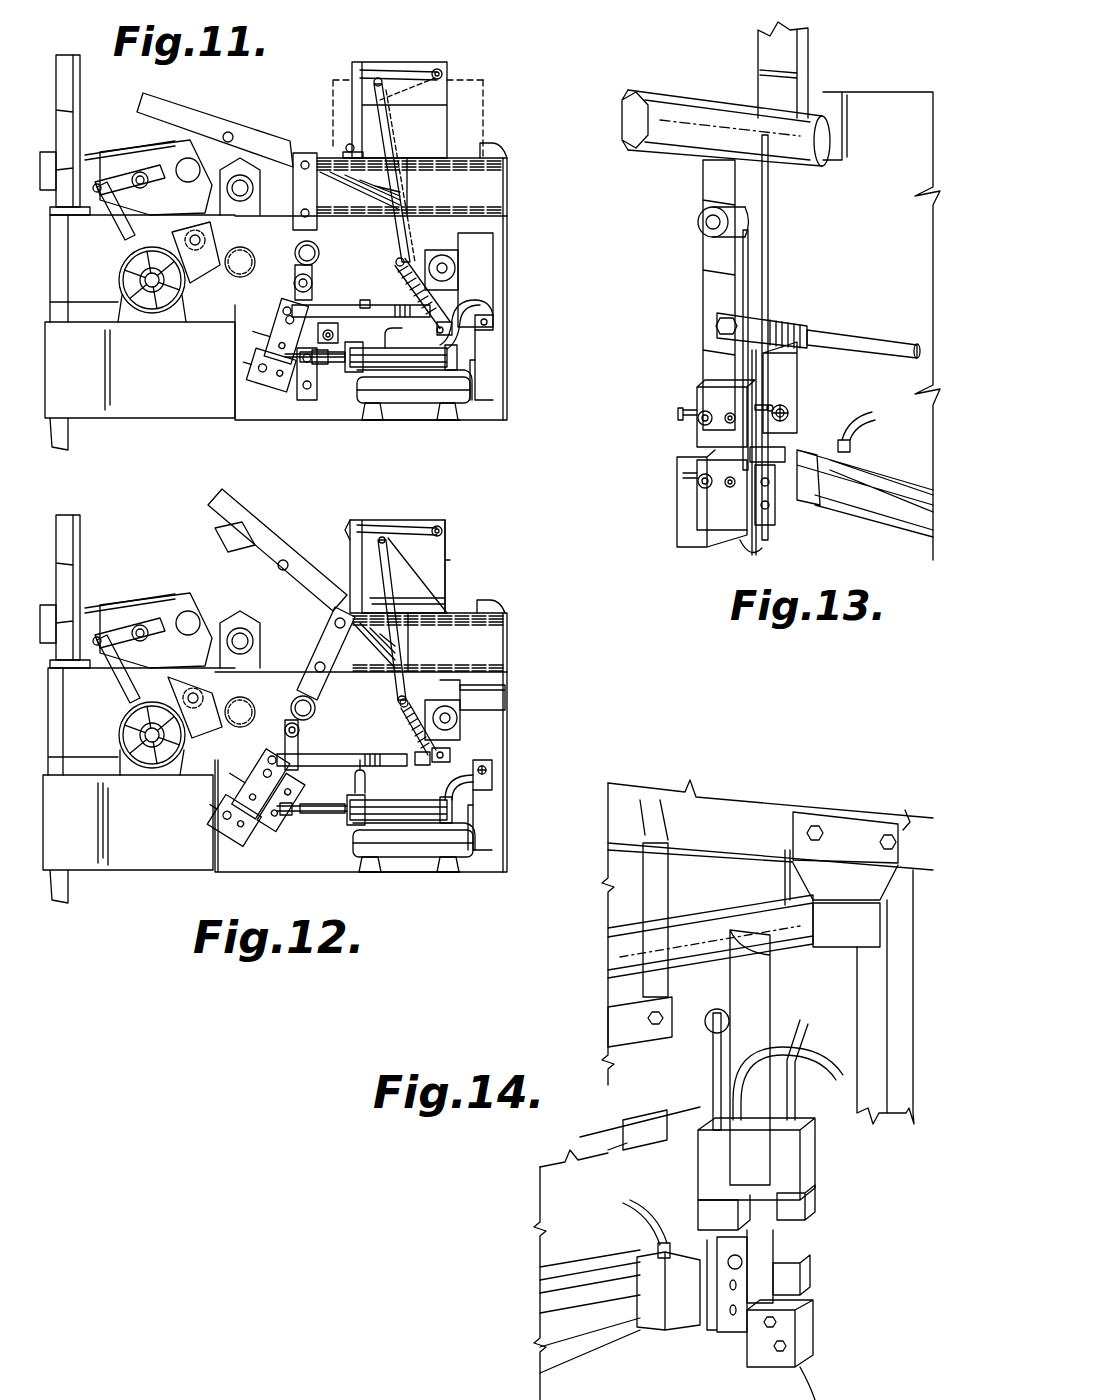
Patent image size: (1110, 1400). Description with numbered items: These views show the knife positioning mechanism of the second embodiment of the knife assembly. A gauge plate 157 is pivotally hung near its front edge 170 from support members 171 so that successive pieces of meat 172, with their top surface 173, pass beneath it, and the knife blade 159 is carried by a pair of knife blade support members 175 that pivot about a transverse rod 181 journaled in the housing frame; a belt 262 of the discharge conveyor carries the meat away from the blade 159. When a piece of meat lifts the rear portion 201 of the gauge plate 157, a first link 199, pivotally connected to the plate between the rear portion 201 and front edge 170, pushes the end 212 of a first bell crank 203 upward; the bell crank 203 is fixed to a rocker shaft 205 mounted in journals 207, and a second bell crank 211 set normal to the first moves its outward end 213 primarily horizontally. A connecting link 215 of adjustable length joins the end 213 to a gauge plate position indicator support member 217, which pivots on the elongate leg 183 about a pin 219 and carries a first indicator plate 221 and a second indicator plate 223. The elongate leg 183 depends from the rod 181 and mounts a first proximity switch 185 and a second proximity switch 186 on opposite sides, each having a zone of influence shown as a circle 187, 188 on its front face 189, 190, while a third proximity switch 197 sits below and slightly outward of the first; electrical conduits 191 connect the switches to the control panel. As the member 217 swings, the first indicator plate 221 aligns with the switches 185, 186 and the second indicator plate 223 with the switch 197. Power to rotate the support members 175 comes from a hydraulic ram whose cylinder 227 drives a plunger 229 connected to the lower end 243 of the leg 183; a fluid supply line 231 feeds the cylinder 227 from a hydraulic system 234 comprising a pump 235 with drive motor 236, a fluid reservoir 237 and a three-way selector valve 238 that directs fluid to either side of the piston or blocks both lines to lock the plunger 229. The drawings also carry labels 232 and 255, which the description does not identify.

In FIG. 11, the gauge plate 157 is at (393, 70).
In FIG. 12, the gauge plate 157 is at (395, 526).
In FIG. 11, the knife blade 159 is at (170, 140).
In FIG. 12, the knife blade 159 is at (216, 532).
In FIG. 12, the front edge 170 is at (446, 526).
In FIG. 12, the support members 171 is at (445, 592).
In FIG. 11, the pieces of meat 172 is at (485, 80).
In FIG. 11, the top surface 173 is at (466, 62).
In FIG. 11, the knife blade support members 175 is at (290, 137).
In FIG. 12, the knife blade support members 175 is at (256, 522).
In FIG. 11, the rod 181 is at (320, 253).
In FIG. 12, the rod 181 is at (316, 708).
In FIG. 13, the rod 181 is at (658, 92).
In FIG. 14, the rod 181 is at (717, 903).
In FIG. 11, the elongate leg 183 is at (313, 283).
In FIG. 13, the elongate leg 183 is at (769, 210).
In FIG. 14, the elongate leg 183 is at (763, 986).
In FIG. 12, the first proximity switch 185 is at (250, 752).
In FIG. 13, the first proximity switch 185 is at (702, 316).
In FIG. 14, the first proximity switch 185 is at (813, 1197).
In FIG. 12, the second proximity switch 186 is at (305, 792).
In FIG. 13, the second proximity switch 186 is at (797, 374).
In FIG. 14, the second proximity switch 186 is at (700, 1207).
In FIG. 13, the circle 187 is at (685, 410).
In FIG. 13, the circle 188 is at (790, 403).
In FIG. 13, the front face 189 is at (698, 385).
In FIG. 13, the front face 190 is at (787, 413).
In FIG. 14, the electrical conduits 191 is at (801, 1030).
In FIG. 13, the third proximity switch 197 is at (677, 512).
In FIG. 14, the third proximity switch 197 is at (803, 1272).
In FIG. 11, the first link 199 is at (405, 185).
In FIG. 12, the first link 199 is at (392, 572).
In FIG. 12, the rear portion 201 is at (352, 520).
In FIG. 12, the first bell crank 203 is at (446, 705).
In FIG. 12, the rocker shaft 205 is at (504, 697).
In FIG. 12, the journals 207 is at (447, 682).
In FIG. 12, the second bell crank 211 is at (452, 750).
In FIG. 12, the end of first bell crank 212 is at (404, 712).
In FIG. 12, the end of second bell crank 213 is at (422, 764).
In FIG. 11, the connecting link 215 is at (378, 312).
In FIG. 12, the connecting link 215 is at (390, 756).
In FIG. 13, the connecting link 215 is at (832, 315).
In FIG. 12, the gauge plate position indicator support member 217 is at (299, 745).
In FIG. 13, the gauge plate position indicator support member 217 is at (749, 263).
In FIG. 14, the gauge plate position indicator support member 217 is at (712, 1053).
In FIG. 12, the pin 219 is at (300, 728).
In FIG. 13, the pin 219 is at (710, 220).
In FIG. 13, the first indicator plate 221 is at (758, 375).
In FIG. 13, the second indicator plate 223 is at (758, 545).
In FIG. 11, the cylinder 227 is at (358, 363).
In FIG. 12, the cylinder 227 is at (352, 816).
In FIG. 13, the cylinder 227 is at (855, 505).
In FIG. 14, the cylinder 227 is at (630, 1330).
In FIG. 12, the plunger 229 is at (297, 822).
In FIG. 11, the fluid supply line 231 is at (366, 304).
In FIG. 13, the fluid supply line 231 is at (835, 437).
In FIG. 14, the fluid supply line 231 is at (657, 1240).
In FIG. 11, the cylinder 232 is at (440, 345).
In FIG. 11, the hydraulic system 234 is at (472, 398).
In FIG. 12, the hydraulic system 234 is at (484, 834).
In FIG. 11, the pump 235 is at (474, 386).
In FIG. 12, the pump 235 is at (477, 818).
In FIG. 11, the drive motor 236 is at (494, 356).
In FIG. 12, the drive motor 236 is at (493, 800).
In FIG. 11, the fluid reservoir 237 is at (415, 405).
In FIG. 12, the fluid reservoir 237 is at (410, 858).
In FIG. 11, the three way selector valve 238 is at (494, 322).
In FIG. 12, the three way selector valve 238 is at (493, 762).
In FIG. 13, the lower end 243 is at (776, 530).
In FIG. 14, the lower end 243 is at (760, 1250).
In FIG. 11, the stop 255 is at (484, 158).
In FIG. 12, the stop 255 is at (496, 613).
In FIG. 11, the belt 262 is at (53, 155).
In FIG. 12, the belt 262 is at (107, 598).